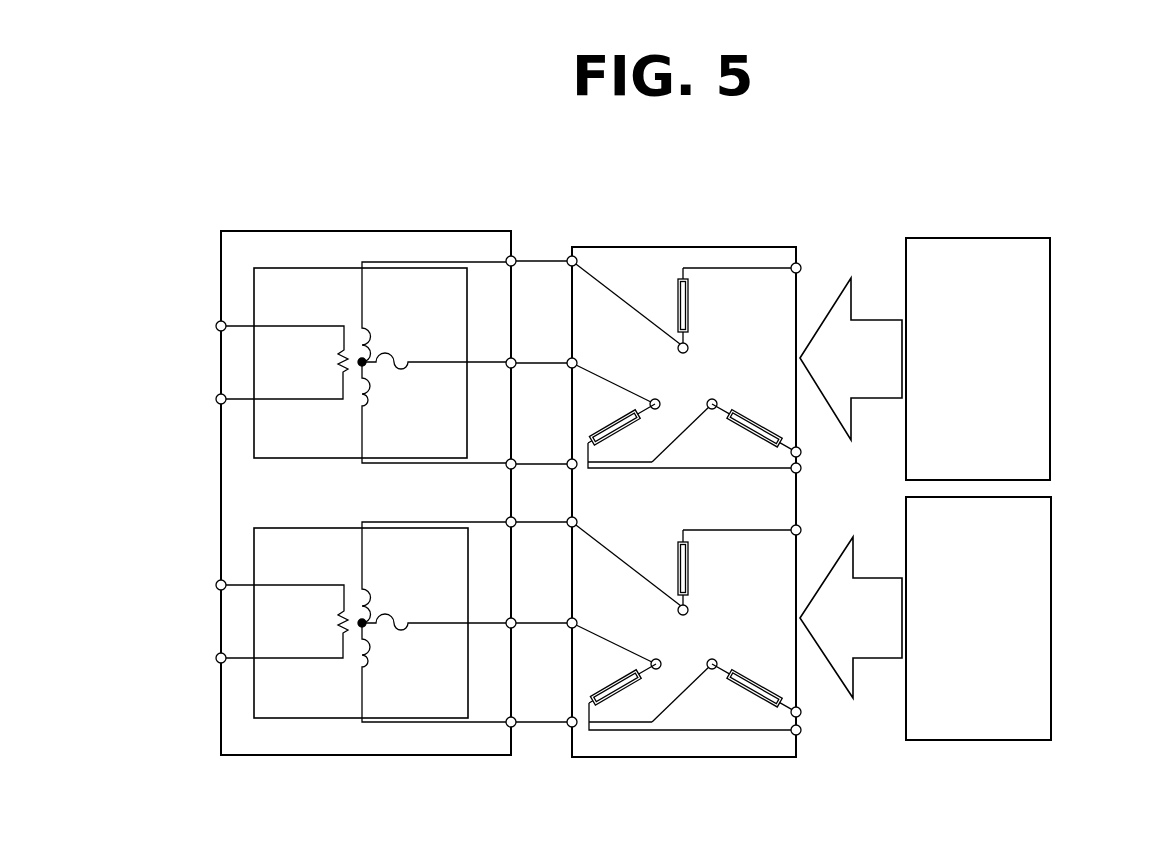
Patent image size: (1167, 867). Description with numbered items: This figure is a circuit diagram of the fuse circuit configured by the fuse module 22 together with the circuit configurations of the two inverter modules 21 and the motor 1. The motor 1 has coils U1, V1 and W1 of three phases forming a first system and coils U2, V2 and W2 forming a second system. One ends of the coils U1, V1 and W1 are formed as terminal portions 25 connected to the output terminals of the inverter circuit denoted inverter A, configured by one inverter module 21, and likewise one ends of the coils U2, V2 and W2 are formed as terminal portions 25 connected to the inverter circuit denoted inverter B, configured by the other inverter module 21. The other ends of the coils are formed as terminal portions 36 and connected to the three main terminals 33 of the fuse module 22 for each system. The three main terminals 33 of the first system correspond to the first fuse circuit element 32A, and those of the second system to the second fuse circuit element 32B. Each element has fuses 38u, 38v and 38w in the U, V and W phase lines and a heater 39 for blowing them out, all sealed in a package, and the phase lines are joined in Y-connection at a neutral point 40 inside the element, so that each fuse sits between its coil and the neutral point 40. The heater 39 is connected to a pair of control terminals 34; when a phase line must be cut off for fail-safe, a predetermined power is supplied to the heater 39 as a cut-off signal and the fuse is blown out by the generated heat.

The motor 1 is at (752, 232).
The inverter module 21 is at (1050, 277).
The fuse module 22 is at (297, 207).
The terminal portion 25 is at (800, 264).
The first fuse circuit element 32A is at (270, 262).
The second fuse circuit element 32B is at (298, 728).
The main terminal 33 is at (513, 257).
The control terminal 34 is at (218, 323).
The terminal portion 36 is at (577, 262).
The fuse 38u is at (359, 326).
The fuse 38v is at (368, 404).
The fuse 38w is at (408, 360).
The heater 39 is at (341, 352).
The neutral point 40 is at (361, 374).
The coil U1 is at (684, 307).
The coil V1 is at (725, 428).
The coil W1 is at (684, 415).
The coil U2 is at (684, 568).
The coil V2 is at (725, 689).
The coil W2 is at (684, 676).